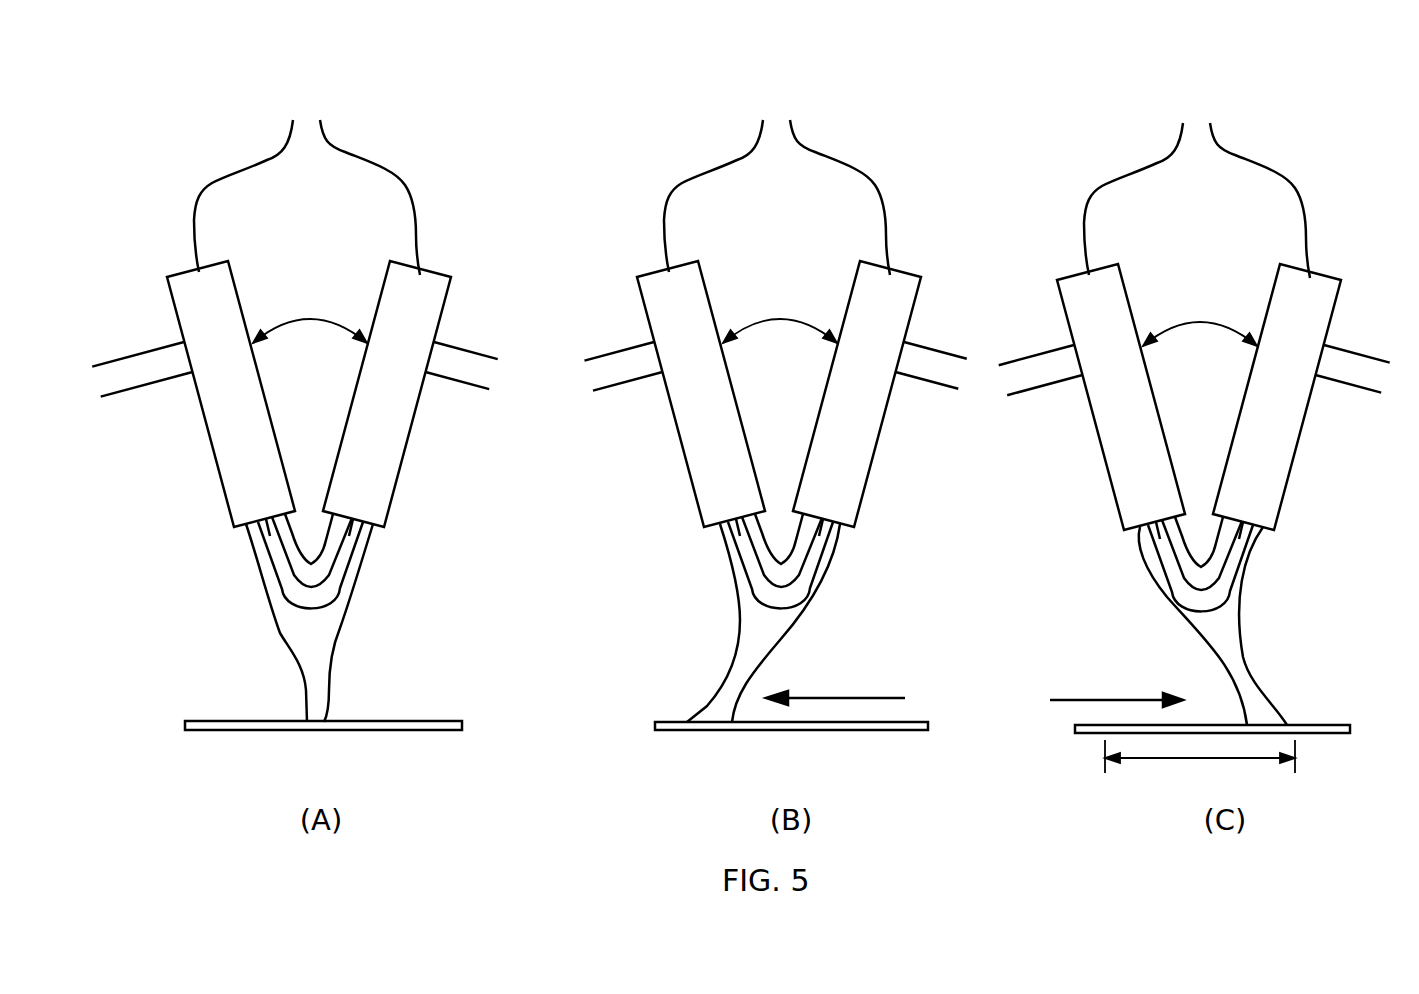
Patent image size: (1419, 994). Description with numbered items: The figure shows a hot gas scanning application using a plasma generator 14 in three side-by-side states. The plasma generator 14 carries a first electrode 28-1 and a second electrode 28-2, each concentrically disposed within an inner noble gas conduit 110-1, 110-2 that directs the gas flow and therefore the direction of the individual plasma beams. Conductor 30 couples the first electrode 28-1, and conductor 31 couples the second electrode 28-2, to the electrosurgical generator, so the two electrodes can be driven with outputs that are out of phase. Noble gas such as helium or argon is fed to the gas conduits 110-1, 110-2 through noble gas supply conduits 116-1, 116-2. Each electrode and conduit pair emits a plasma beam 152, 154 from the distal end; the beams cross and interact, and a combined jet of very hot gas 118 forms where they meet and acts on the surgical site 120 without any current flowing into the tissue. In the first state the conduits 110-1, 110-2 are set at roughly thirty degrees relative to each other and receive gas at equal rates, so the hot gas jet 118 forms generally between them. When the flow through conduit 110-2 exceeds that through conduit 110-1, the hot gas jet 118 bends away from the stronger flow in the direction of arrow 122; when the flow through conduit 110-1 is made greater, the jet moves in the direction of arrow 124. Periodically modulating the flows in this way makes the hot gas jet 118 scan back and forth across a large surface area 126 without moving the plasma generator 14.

The plasma generator 14 is at (746, 311).
The conductor 30 is at (217, 180).
The conductor 31 is at (407, 187).
The first electrode 28-1 is at (235, 413).
The second electrode 28-2 is at (383, 413).
The inner noble gas conduit 110-1 is at (651, 395).
The inner noble gas conduit 110-2 is at (852, 395).
The noble gas supply conduit 116-1 is at (133, 377).
The noble gas supply conduit 116-2 is at (457, 371).
The hot gas jet 118 is at (322, 677).
The surgical site 120 is at (463, 722).
The arrow 122 is at (843, 698).
The arrow 124 is at (1120, 699).
The surface area 126 is at (1140, 758).
The plasma beam 152 is at (270, 545).
The plasma beam 154 is at (350, 545).